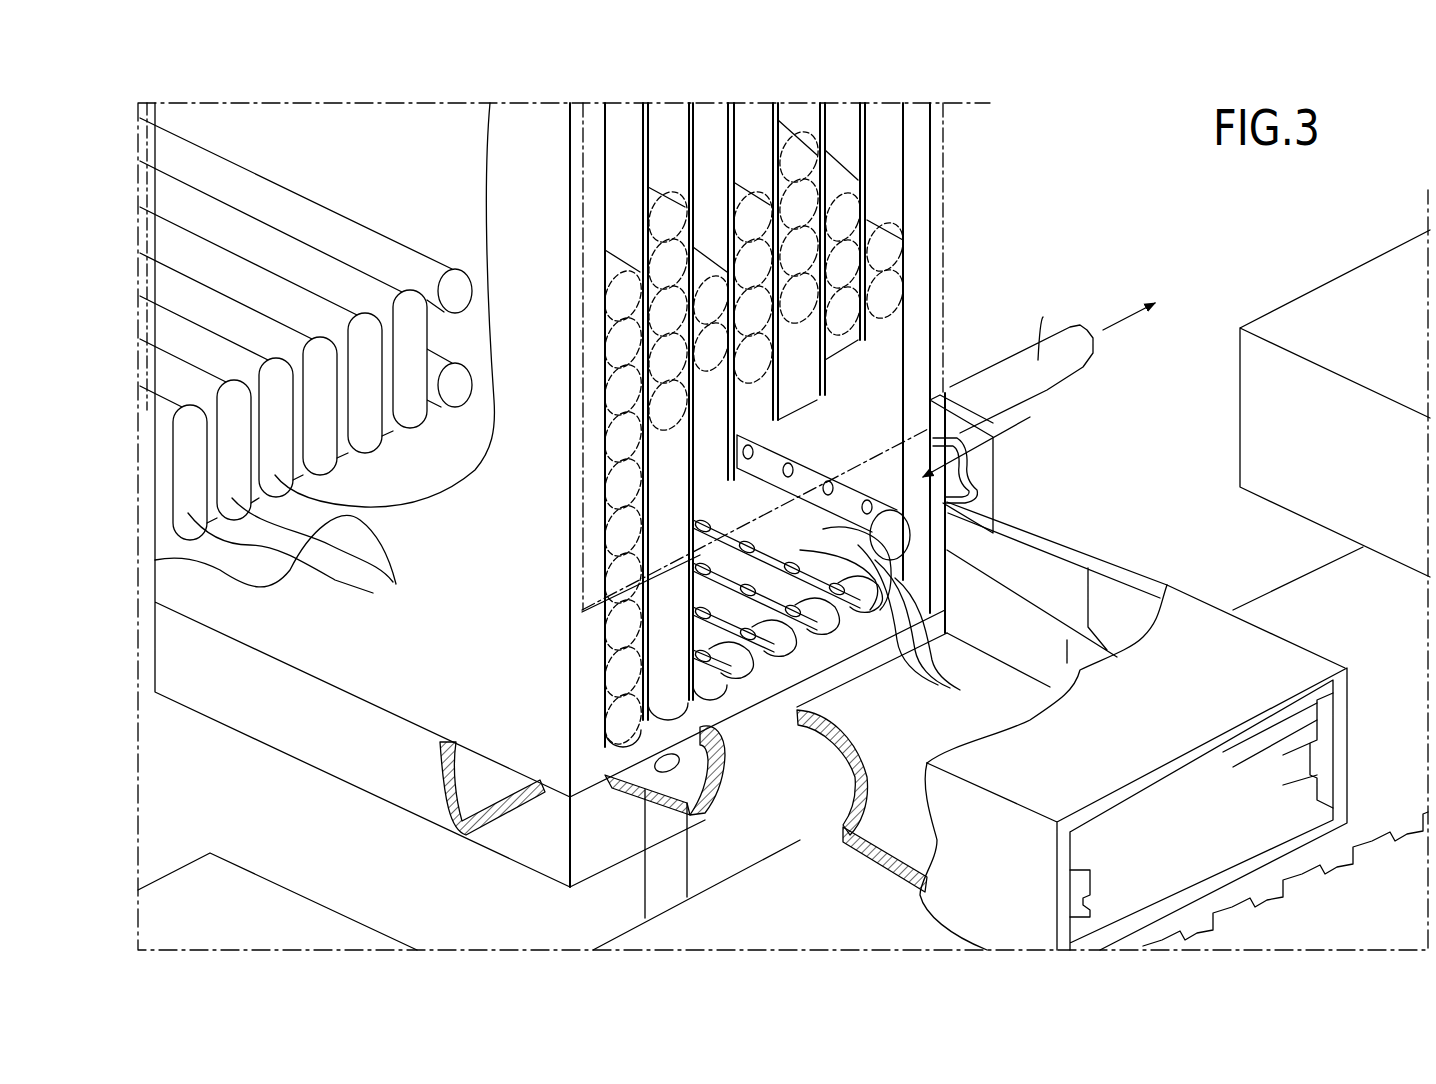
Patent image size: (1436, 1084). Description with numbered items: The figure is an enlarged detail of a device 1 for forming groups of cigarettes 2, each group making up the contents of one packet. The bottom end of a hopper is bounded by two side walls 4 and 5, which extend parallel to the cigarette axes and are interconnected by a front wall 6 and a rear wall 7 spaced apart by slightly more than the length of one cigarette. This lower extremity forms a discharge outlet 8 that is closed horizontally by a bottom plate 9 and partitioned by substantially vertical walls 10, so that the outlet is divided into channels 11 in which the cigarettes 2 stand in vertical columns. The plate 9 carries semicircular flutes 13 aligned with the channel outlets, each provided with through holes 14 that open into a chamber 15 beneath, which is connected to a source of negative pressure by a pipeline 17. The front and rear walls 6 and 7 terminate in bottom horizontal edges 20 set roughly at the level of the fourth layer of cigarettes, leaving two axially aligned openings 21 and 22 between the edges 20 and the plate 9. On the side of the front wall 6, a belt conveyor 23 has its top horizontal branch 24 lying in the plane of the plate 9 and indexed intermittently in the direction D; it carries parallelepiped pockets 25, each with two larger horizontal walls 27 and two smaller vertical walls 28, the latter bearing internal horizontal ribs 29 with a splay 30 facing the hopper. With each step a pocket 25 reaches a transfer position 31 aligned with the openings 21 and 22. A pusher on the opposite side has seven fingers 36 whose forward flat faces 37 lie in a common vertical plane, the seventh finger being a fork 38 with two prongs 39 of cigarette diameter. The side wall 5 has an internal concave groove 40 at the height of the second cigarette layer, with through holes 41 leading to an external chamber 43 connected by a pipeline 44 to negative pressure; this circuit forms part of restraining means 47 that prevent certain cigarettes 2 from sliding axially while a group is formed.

The device 1 is at (345, 817).
The cigarettes 2 is at (590, 405).
The side wall 4 is at (410, 670).
The side wall 5 is at (930, 208).
The front wall 6 is at (943, 253).
The rear wall 7 is at (150, 283).
The discharge outlet 8 is at (580, 701).
The bottom plate 9 is at (730, 700).
The vertical walls 10 is at (870, 175).
The channels 11 is at (604, 214).
The flutes 13 is at (800, 683).
The through holes 14 is at (938, 685).
The chamber 15 is at (623, 790).
The pipeline 17 is at (673, 865).
The bottom horizontal edges 20 is at (240, 380).
The opening 21 is at (1030, 417).
The opening 22 is at (150, 512).
The conveyor 23 is at (1250, 585).
The top horizontal branch 24 is at (1363, 830).
The pockets 25 is at (384, 926).
The larger horizontal walls 27 is at (1138, 783).
The smaller vertical walls 28 is at (1340, 703).
The horizontal rib 29 is at (1297, 757).
The splay 30 is at (1043, 620).
The transfer position 31 is at (915, 565).
The fingers 36 is at (433, 265).
The flat faces 37 is at (283, 561).
The fork 38 is at (186, 128).
The prongs 39 is at (440, 358).
The groove 40 is at (823, 530).
The through holes 41 is at (808, 468).
The chamber 43 is at (1000, 485).
The pipeline 44 is at (1043, 317).
The restraining means 47 is at (963, 367).
The conveying direction D is at (366, 188).